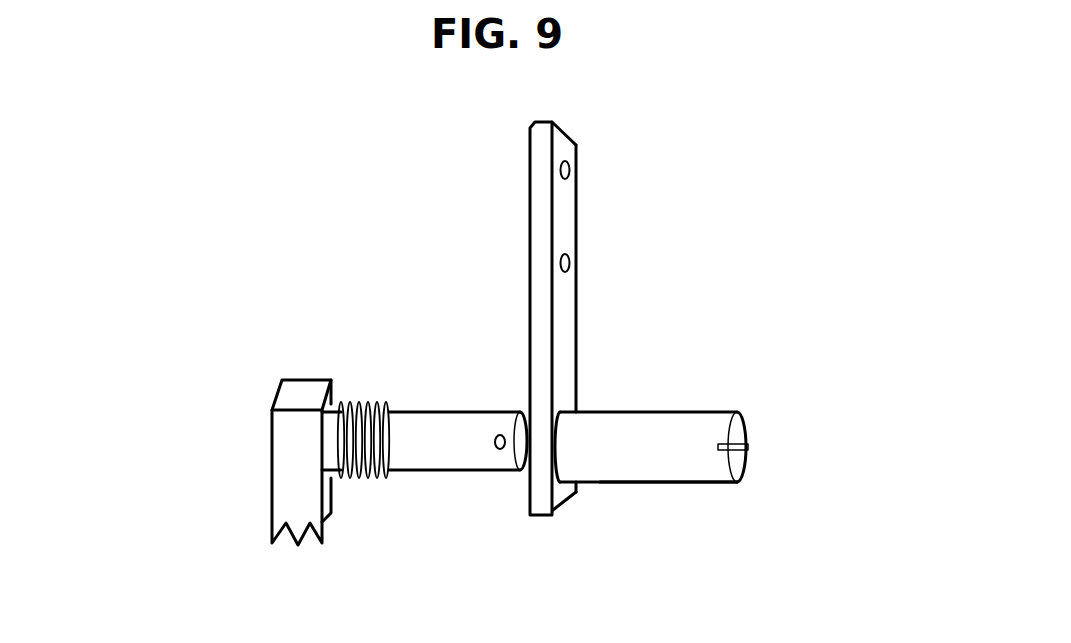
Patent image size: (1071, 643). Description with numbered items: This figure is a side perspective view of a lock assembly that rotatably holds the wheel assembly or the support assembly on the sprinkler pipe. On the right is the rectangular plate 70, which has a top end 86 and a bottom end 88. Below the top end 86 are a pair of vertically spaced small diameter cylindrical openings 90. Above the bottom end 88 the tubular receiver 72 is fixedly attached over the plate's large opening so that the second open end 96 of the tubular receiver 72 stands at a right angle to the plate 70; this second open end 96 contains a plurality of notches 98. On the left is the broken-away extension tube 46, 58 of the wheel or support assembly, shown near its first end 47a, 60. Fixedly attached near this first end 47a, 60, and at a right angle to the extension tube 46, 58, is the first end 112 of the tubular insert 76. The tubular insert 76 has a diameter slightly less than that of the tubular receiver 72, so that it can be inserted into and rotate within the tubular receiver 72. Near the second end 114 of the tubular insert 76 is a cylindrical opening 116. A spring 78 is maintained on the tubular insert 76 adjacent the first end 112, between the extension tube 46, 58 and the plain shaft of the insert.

The extension tube 46 is at (207, 477).
The support assembly extension tube 58 is at (280, 485).
The first end 47a is at (261, 392).
The first end 60 is at (308, 388).
The first end 112 is at (335, 477).
The spring 78 is at (362, 477).
The tubular insert 76 is at (428, 423).
The second end 114 is at (527, 474).
The cylindrical opening 116 is at (503, 427).
The plate 70 is at (570, 322).
The top end 86 is at (563, 123).
The bottom end 88 is at (562, 508).
The small diameter cylindrical openings 90 is at (572, 168).
The second open end 96 is at (747, 467).
The tubular receiver 72 is at (662, 467).
The notches 98 is at (750, 445).